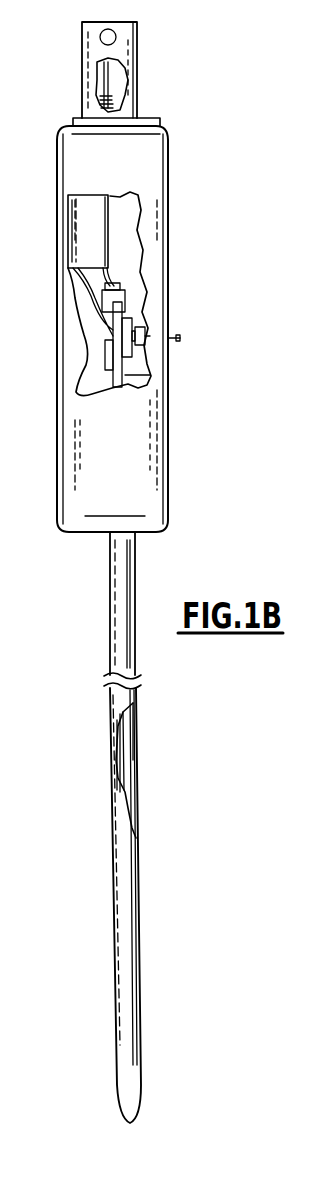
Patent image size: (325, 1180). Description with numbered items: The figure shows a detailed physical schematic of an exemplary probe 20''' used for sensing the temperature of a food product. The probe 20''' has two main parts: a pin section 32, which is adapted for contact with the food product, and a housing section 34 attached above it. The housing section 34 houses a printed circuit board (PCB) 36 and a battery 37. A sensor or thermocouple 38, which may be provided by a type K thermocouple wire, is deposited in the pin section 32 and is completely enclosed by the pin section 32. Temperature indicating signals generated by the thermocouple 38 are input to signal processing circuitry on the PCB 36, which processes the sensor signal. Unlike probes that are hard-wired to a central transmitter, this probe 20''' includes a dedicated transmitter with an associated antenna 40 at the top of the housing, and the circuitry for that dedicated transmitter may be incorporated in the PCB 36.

The probe 20''' is at (168, 572).
The antenna 40 is at (121, 75).
The housing section 34 is at (169, 409).
The battery 37 is at (86, 302).
The printed circuit board (PCB) 36 is at (143, 363).
The pin section 32 is at (140, 955).
The thermocouple 38 is at (131, 768).